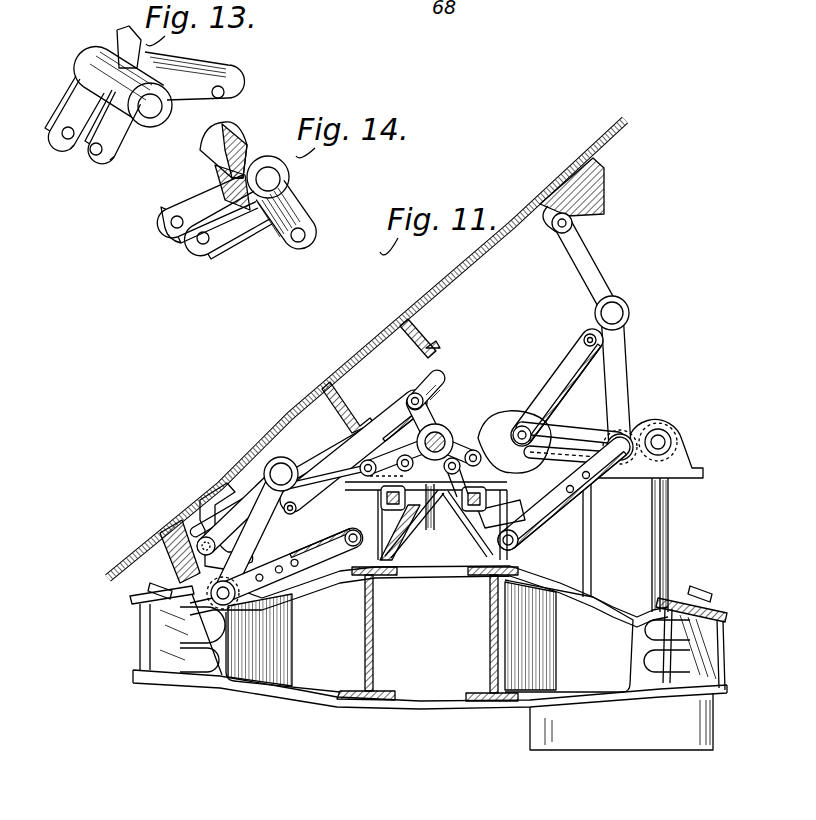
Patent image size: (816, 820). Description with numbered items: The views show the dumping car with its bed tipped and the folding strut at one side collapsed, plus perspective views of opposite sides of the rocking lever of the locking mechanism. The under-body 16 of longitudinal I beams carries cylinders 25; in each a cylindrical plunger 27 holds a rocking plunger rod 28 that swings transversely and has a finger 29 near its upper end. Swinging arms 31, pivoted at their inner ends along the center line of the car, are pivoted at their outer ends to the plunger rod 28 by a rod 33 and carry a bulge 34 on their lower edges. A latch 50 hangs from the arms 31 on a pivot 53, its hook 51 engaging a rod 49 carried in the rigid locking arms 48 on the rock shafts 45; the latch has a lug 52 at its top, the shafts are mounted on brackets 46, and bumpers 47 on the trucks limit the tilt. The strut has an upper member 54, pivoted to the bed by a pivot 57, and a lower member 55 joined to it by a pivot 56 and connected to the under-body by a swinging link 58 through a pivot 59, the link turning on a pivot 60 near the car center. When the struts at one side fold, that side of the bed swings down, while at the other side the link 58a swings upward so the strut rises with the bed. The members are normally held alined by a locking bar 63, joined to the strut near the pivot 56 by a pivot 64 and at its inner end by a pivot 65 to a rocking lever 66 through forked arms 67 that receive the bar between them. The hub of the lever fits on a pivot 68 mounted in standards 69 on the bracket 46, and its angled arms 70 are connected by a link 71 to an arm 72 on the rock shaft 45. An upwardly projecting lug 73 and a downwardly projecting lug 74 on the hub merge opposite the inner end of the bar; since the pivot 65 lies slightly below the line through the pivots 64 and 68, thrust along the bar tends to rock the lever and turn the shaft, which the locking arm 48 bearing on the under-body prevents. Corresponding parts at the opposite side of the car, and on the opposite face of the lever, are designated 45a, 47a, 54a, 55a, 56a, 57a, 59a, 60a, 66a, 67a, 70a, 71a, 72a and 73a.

In FIG. 11, the under-body 16 is at (447, 683).
In FIG. 11, the cylinder 25 is at (611, 740).
In FIG. 11, the cylindrical plunger 27 is at (657, 518).
In FIG. 11, the plunger rod 28 is at (667, 483).
In FIG. 11, the finger 29 is at (697, 465).
In FIG. 11, the swinging arm 31 is at (590, 426).
In FIG. 11, the rod 33 is at (663, 440).
In FIG. 11, the projection or bulge 34 is at (572, 424).
In FIG. 11, the rock shaft 45 is at (450, 553).
In FIG. 11, the strut 45a is at (404, 560).
In FIG. 11, the bracket 46 is at (467, 550).
In FIG. 11, the bumper 47 is at (703, 638).
In FIG. 11, the bracket 47a is at (157, 632).
In FIG. 11, the locking arm 48 is at (501, 514).
In FIG. 11, the rod 49 is at (564, 493).
In FIG. 11, the latch 50 is at (497, 443).
In FIG. 11, the hook 51 is at (515, 498).
In FIG. 11, the lug 52 is at (560, 407).
In FIG. 11, the pivot 53 is at (523, 428).
In FIG. 11, the upper member 54 is at (237, 503).
In FIG. 11, the link 54a is at (593, 263).
In FIG. 11, the lower member 55 is at (255, 534).
In FIG. 11, the strut 55a is at (620, 352).
In FIG. 11, the pivot 56 is at (284, 468).
In FIG. 11, the pivot 56a is at (596, 309).
In FIG. 11, the pivot 57 is at (205, 533).
In FIG. 11, the pivot 57a is at (572, 225).
In FIG. 11, the swinging link 58 is at (313, 542).
In FIG. 11, the swinging link 58a is at (572, 503).
In FIG. 11, the pivot 59 is at (293, 556).
In FIG. 11, the pivot 59a is at (630, 433).
In FIG. 11, the pivot 60 is at (358, 533).
In FIG. 11, the pivot 60a is at (517, 545).
In FIG. 11, the locking bar 63 is at (352, 465).
In FIG. 11, the pivot 64 is at (233, 503).
In FIG. 11, the pivot 65 is at (413, 398).
In FIG. 14, the rocking lever 66 is at (288, 170).
In FIG. 11, the rocking lever 66 is at (471, 452).
In FIG. 13, the boss 66a is at (92, 60).
In FIG. 14, the arm 67 is at (172, 240).
In FIG. 11, the arm 67 is at (404, 417).
In FIG. 13, the arm 67a is at (207, 61).
In FIG. 11, the pivot 68 is at (441, 395).
In FIG. 11, the standard 69 is at (450, 508).
In FIG. 14, the arm 70 is at (287, 247).
In FIG. 11, the arm 70 is at (405, 442).
In FIG. 13, the arm 70a is at (100, 160).
In FIG. 11, the link 71 is at (466, 459).
In FIG. 11, the link 71a is at (294, 484).
In FIG. 11, the arm 72 is at (470, 512).
In FIG. 11, the block 72a is at (383, 497).
In FIG. 14, the lug 73 is at (233, 131).
In FIG. 11, the lug 73 is at (438, 432).
In FIG. 13, the tab 73a is at (120, 32).
In FIG. 14, the lug 74 is at (247, 228).